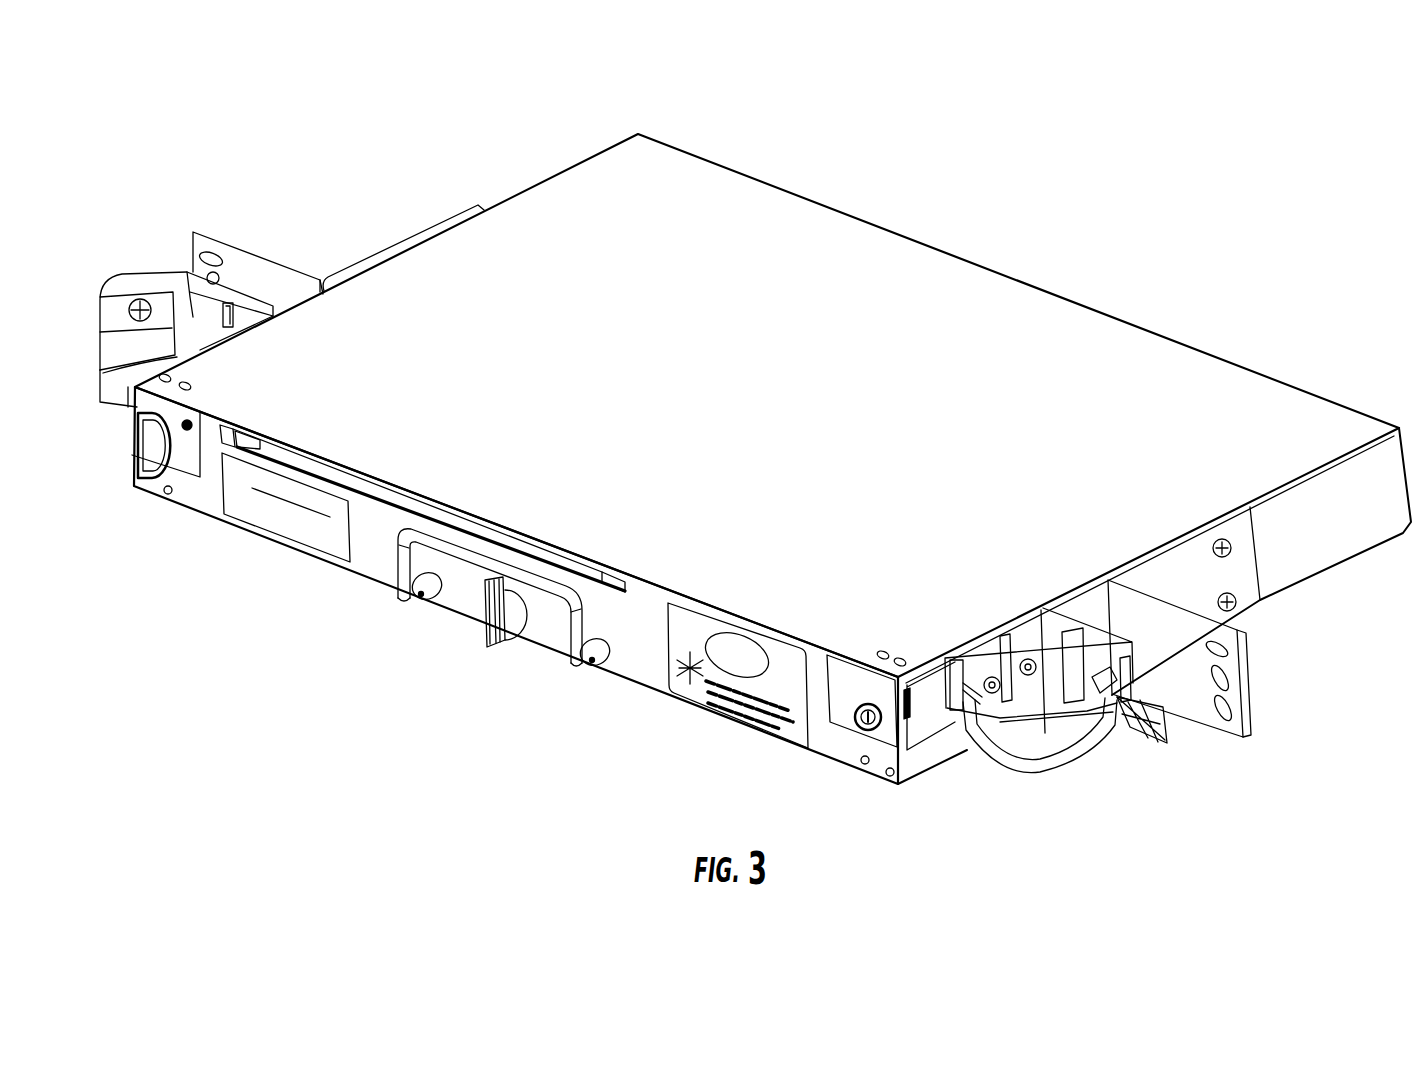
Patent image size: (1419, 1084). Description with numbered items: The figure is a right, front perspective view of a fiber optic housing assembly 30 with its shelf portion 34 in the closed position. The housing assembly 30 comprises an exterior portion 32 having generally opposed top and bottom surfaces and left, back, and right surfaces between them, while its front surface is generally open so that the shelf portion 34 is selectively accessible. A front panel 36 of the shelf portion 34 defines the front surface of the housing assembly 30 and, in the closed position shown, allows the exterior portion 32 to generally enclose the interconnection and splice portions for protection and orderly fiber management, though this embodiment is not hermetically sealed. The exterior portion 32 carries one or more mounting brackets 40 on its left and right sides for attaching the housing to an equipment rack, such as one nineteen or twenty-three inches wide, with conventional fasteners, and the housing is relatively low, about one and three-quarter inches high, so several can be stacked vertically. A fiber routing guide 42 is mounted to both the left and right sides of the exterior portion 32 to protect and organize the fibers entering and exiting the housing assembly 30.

The fiber optic housing assembly 30 is at (750, 483).
The exterior portion 32 is at (585, 312).
The shelf portion 34 is at (213, 507).
The front panel 36 is at (377, 567).
The mounting bracket 40 is at (233, 243).
The fiber routing guide 42 is at (127, 283).